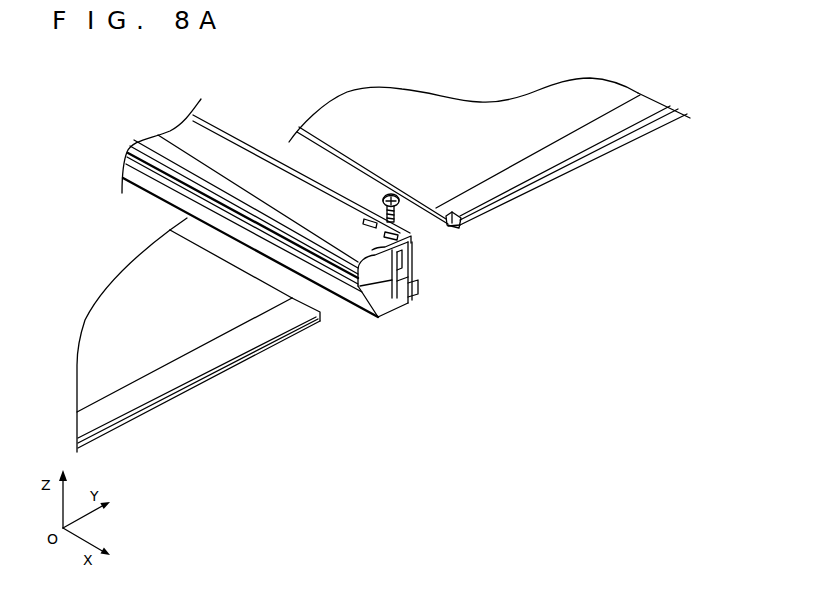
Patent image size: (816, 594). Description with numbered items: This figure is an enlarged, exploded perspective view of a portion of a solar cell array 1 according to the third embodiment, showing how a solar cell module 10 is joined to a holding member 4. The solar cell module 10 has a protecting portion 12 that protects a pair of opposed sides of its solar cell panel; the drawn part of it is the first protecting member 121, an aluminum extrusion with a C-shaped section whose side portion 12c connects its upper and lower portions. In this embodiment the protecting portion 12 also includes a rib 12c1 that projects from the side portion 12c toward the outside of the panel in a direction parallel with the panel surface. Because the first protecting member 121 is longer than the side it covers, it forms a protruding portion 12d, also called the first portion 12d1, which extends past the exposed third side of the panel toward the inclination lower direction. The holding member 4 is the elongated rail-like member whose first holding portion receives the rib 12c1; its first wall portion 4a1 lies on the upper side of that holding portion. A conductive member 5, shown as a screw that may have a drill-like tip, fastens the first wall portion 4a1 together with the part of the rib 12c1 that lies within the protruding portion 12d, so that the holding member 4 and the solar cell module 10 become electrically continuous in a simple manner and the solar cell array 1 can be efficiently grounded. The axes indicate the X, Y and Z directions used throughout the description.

The solar cell array 1 is at (623, 316).
The solar cell module 10 is at (233, 397).
The protecting portion 12 is at (494, 166).
The first protecting member 121 is at (494, 166).
The side portion 12c is at (457, 228).
The rib 12c1 is at (570, 168).
The protruding portion 12d is at (534, 219).
The first portion 12d1 is at (461, 217).
The holding member 4 is at (338, 232).
The first wall portion 4a1 is at (408, 218).
The conductive member 5 is at (397, 208).